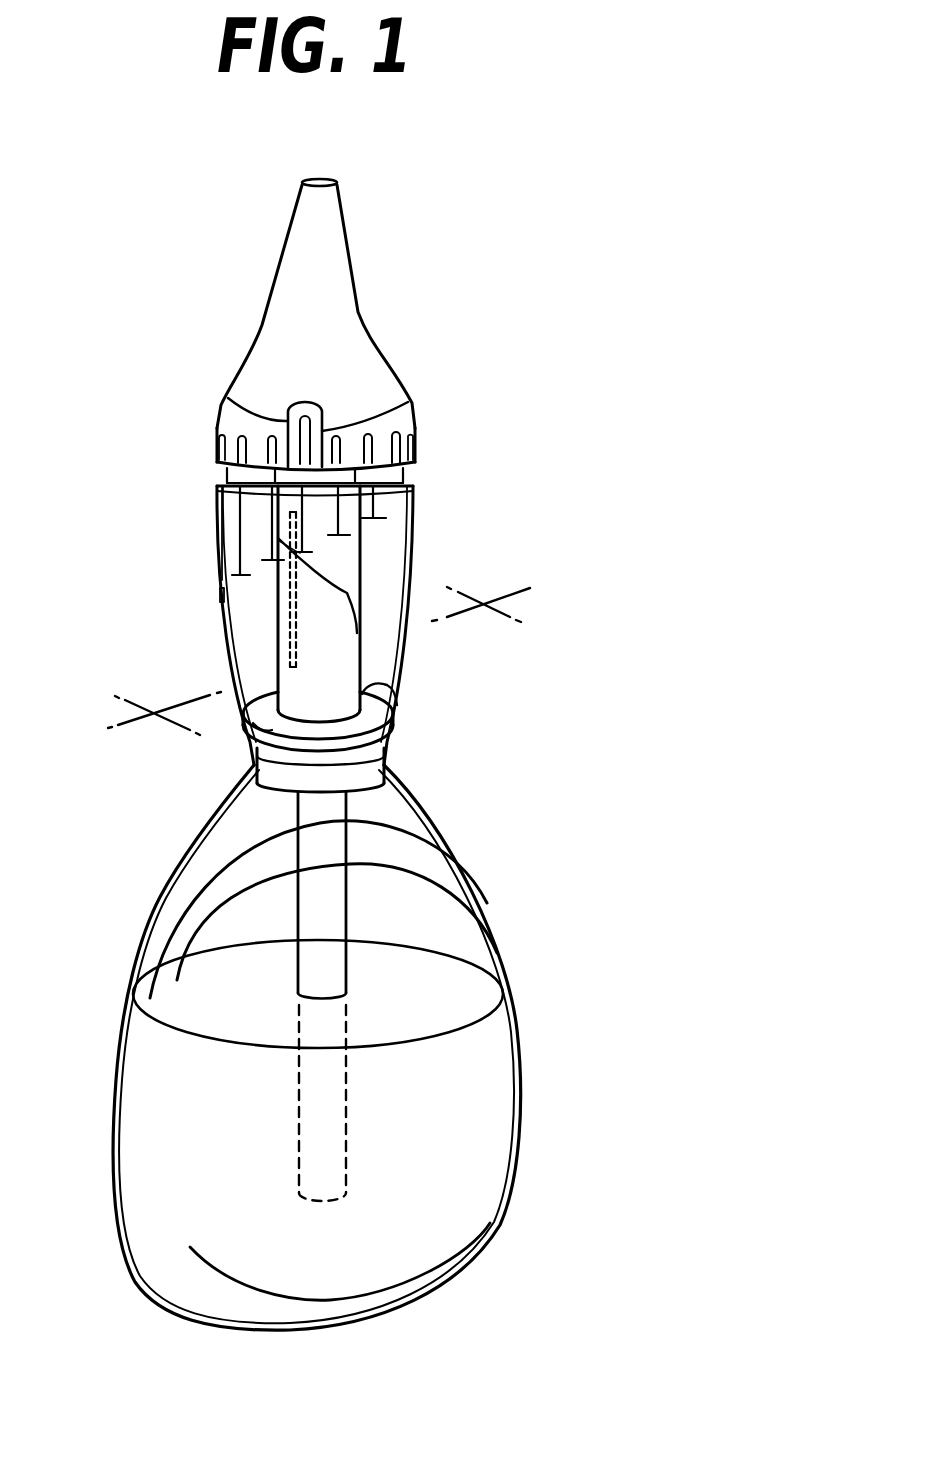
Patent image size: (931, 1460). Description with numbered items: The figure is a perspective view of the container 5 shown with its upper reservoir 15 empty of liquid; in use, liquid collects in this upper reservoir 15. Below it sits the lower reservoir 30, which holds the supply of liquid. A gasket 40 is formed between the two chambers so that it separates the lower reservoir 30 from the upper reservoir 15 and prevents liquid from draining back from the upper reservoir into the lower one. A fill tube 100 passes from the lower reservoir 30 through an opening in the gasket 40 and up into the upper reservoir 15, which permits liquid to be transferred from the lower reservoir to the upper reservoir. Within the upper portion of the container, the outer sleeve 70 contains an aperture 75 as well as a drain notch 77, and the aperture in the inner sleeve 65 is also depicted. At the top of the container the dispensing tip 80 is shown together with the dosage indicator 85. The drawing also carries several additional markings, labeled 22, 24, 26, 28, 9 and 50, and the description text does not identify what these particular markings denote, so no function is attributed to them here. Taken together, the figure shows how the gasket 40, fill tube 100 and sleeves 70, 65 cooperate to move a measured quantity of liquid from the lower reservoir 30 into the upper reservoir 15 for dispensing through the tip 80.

The container 5 is at (609, 314).
The dispensing tip 80 is at (392, 358).
The dosage indicator 85 is at (290, 420).
The upper reservoir 15 is at (417, 518).
The scale mark 22 is at (243, 546).
The scale mark 24 is at (272, 541).
The scale mark 26 is at (306, 536).
The scale mark 28 is at (341, 531).
The outer sleeve 70 is at (360, 658).
The aperture 75 is at (290, 548).
The inner sleeve 65 is at (275, 645).
The section line 9- 9 is at (153, 702).
The drain notch 77 is at (378, 688).
The flange 50 is at (243, 720).
The gasket 40 is at (405, 790).
The lower reservoir 30 is at (520, 1035).
The fill tube 100 is at (290, 913).